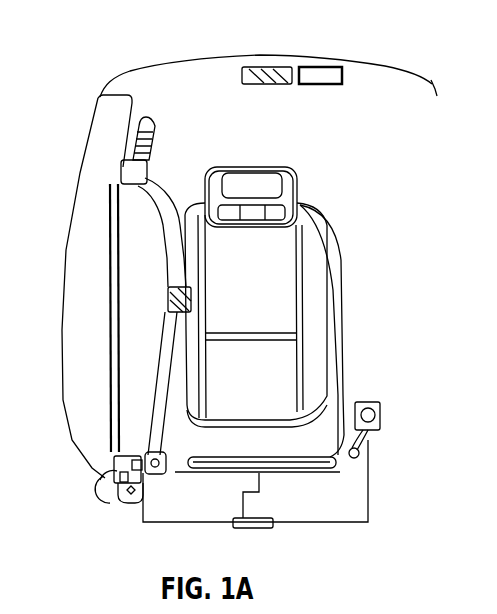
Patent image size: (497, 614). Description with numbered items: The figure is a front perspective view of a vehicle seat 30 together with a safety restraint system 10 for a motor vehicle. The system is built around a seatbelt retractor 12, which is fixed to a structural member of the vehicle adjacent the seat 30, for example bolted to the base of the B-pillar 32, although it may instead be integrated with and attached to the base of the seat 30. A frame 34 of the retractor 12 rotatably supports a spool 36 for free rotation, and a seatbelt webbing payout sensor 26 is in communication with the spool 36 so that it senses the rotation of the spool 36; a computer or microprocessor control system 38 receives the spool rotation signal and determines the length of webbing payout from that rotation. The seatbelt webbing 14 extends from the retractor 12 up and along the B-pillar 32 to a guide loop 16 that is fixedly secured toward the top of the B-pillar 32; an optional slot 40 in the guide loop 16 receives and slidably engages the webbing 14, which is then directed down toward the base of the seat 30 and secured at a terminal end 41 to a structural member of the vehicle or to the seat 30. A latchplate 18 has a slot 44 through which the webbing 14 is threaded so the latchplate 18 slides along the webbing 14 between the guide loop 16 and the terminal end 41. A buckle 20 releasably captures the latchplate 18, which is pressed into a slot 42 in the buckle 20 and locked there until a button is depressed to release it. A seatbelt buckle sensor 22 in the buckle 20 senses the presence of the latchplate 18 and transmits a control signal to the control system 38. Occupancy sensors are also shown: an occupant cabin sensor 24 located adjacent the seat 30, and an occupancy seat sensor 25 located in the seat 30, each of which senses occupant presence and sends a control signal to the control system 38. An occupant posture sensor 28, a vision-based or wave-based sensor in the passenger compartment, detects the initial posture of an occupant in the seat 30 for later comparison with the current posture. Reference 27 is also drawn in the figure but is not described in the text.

The safety restraint system 10 is at (181, 165).
The seatbelt retractor 12 is at (150, 468).
The seatbelt webbing 14 is at (96, 283).
The guide loop 16 is at (152, 141).
The latchplate 18 is at (171, 294).
The buckle 20 is at (382, 410).
The seatbelt buckle sensor 22 is at (377, 413).
The occupant cabin sensor 24 is at (268, 67).
The occupancy seat sensor 25 is at (333, 470).
The seatbelt webbing payout sensor 26 is at (146, 486).
The retractor spring 27 is at (115, 478).
The occupant posture sensor 28 is at (342, 77).
The vehicle seat 30 is at (326, 234).
The B-pillar 32 is at (72, 370).
The frame 34 is at (100, 474).
The spool 36 is at (118, 503).
The microprocessor control system 38 is at (255, 530).
The slot 40 is at (119, 182).
The terminal end 41 is at (163, 460).
The slot 42 is at (370, 402).
The slot 44 is at (198, 292).